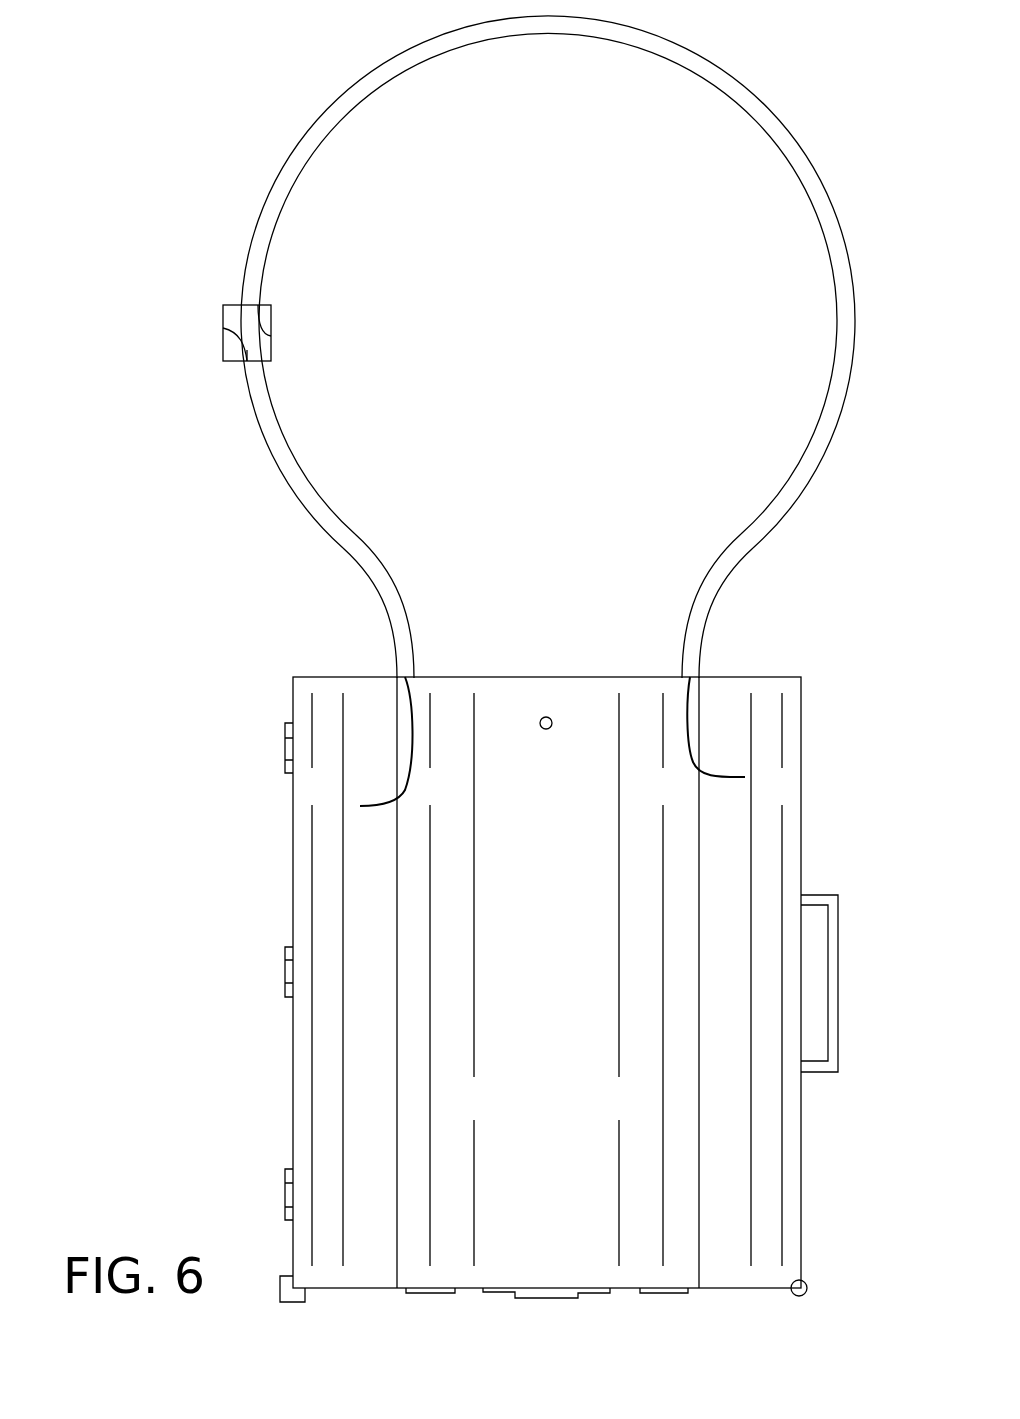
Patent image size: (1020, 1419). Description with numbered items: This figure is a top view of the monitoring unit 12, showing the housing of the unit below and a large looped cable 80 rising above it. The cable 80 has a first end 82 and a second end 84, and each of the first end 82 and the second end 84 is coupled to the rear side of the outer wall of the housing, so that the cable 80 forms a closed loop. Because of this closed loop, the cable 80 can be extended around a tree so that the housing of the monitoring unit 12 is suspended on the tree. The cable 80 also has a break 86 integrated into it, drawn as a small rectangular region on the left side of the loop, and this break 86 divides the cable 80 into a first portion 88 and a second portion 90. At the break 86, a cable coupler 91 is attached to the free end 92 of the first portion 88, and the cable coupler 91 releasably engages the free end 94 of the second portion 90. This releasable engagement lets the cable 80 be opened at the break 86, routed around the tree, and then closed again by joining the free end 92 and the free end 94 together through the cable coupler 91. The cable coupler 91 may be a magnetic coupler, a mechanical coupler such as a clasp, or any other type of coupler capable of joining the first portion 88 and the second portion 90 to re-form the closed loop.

The monitoring unit 12 is at (228, 696).
The cable 80 is at (267, 462).
The first end 82 is at (360, 806).
The second end 84 is at (745, 777).
The break 86 is at (212, 307).
The first portion 88 is at (243, 426).
The second portion 90 is at (306, 122).
The cable coupler 91 is at (270, 347).
The free end 92 is at (223, 328).
The free end 94 is at (271, 336).